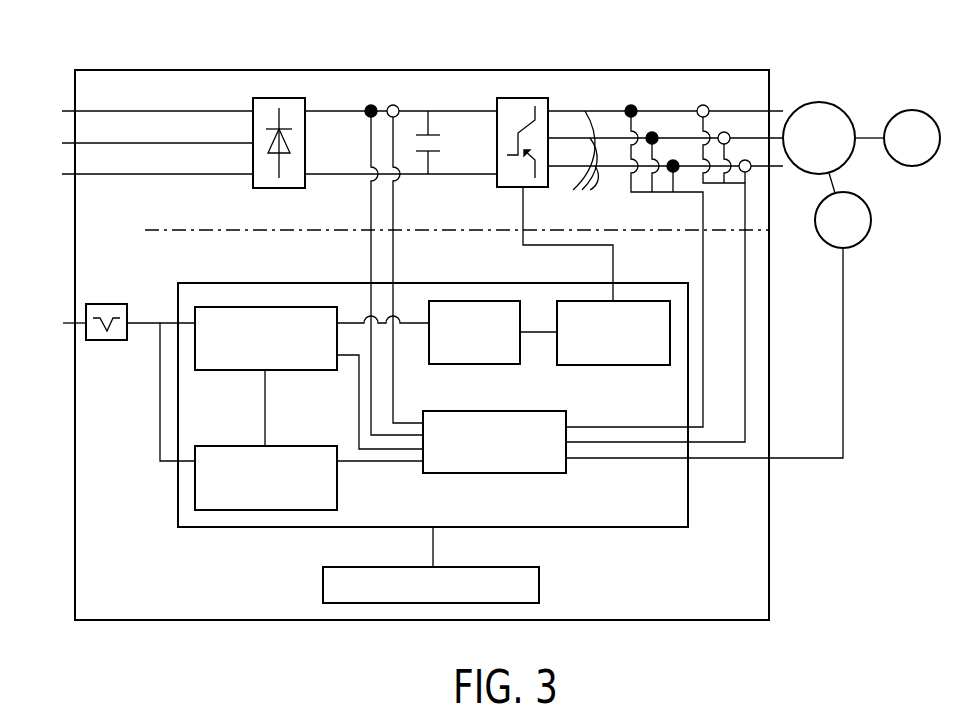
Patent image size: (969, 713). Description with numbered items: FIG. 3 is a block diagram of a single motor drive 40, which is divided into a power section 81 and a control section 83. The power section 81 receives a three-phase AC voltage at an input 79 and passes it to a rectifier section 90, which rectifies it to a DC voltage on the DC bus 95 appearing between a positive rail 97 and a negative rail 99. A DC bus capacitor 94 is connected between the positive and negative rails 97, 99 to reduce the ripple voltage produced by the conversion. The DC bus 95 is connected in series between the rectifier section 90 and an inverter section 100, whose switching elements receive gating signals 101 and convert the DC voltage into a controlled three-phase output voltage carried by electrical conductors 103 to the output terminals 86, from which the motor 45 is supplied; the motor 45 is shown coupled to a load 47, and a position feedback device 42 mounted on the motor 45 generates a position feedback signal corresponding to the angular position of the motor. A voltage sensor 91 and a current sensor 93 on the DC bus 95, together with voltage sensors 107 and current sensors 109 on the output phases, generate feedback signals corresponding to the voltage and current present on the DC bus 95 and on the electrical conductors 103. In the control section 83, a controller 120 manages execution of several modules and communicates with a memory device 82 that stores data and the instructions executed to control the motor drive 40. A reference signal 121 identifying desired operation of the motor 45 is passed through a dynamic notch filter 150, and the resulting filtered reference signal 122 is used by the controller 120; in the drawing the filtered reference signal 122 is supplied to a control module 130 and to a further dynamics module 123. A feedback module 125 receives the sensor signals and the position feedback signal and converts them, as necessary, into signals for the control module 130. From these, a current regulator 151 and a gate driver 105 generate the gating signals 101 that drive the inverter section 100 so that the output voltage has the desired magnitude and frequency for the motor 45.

The motor drive 40 is at (779, 39).
The position feedback device 42 is at (856, 246).
The motor 45 is at (832, 103).
The load 47 is at (933, 166).
The input 79 is at (64, 101).
The power section 81 is at (97, 215).
The memory device 82 is at (539, 582).
The control section 83 is at (97, 258).
The output terminals 86 is at (783, 91).
The rectifier section 90 is at (279, 97).
The voltage sensor 91 is at (370, 105).
The current sensor 93 is at (392, 104).
The DC bus capacitor 94 is at (447, 134).
The DC bus 95 is at (313, 116).
The positive rail 97 is at (320, 110).
The negative rail 99 is at (333, 177).
The inverter section 100 is at (523, 97).
The gating signals 101 is at (545, 246).
The electrical conductor 103 is at (580, 164).
The gate driver 105 is at (588, 366).
The voltage sensors 107 is at (673, 160).
The current sensors 109 is at (745, 160).
The controller 120 is at (262, 292).
The reference signal 121 is at (72, 327).
The filtered reference signal 122 is at (150, 326).
The dynamics module 123 is at (337, 492).
The feedback module 125 is at (493, 474).
The control module 130 is at (303, 372).
The dynamic notch filter 150 is at (100, 341).
The current regulator 151 is at (473, 365).